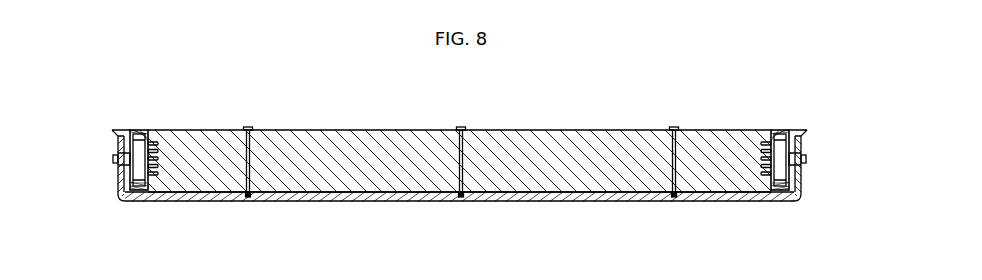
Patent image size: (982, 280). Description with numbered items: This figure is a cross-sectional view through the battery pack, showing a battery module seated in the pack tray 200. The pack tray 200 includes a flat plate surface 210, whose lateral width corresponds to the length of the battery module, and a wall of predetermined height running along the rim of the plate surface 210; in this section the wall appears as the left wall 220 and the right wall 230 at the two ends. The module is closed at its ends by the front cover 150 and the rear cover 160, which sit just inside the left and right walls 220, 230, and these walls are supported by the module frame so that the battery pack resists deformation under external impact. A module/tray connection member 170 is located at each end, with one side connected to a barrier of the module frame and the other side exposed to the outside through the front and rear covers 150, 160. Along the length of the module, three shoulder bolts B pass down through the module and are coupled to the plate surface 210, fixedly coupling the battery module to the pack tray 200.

The front cover 150 is at (137, 128).
The rear cover 160 is at (778, 128).
The module/tray connection member 170 is at (138, 185).
The pack tray 200 is at (456, 161).
The plate surface 210 is at (400, 197).
The left wall 220 is at (122, 140).
The right wall 230 is at (800, 141).
The shoulder bolt B is at (248, 126).